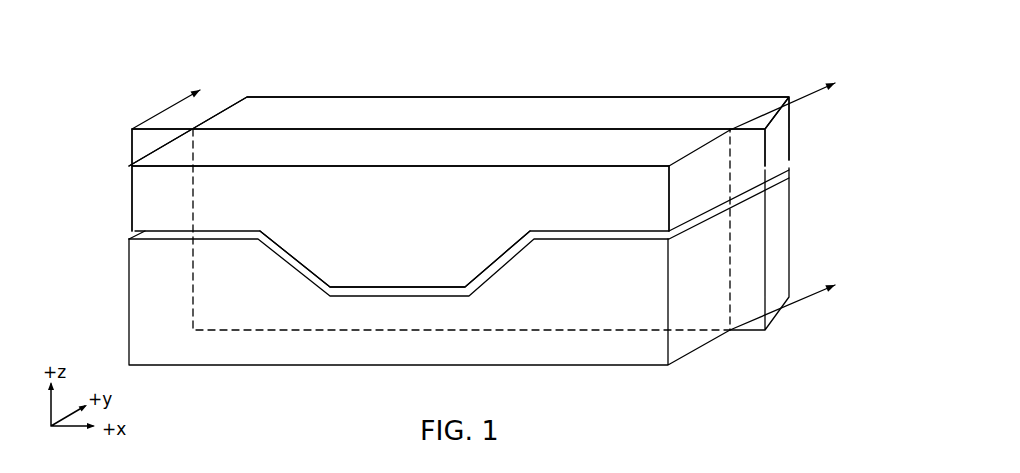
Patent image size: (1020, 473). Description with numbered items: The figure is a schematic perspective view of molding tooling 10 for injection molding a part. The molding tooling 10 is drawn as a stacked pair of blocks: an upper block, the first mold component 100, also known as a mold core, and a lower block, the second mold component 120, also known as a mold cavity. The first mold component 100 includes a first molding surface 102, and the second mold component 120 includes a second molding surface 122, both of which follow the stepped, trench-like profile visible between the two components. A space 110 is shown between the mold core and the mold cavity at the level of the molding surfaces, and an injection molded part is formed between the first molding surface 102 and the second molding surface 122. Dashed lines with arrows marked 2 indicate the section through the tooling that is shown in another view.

The molding tooling 10 is at (648, 63).
The first mold component 100 is at (407, 97).
The first molding surface 102 is at (237, 231).
The cavity 110 is at (128, 234).
The second mold component 120 is at (610, 367).
The second molding surface 122 is at (585, 240).
The section line 2- 2 is at (494, 195).